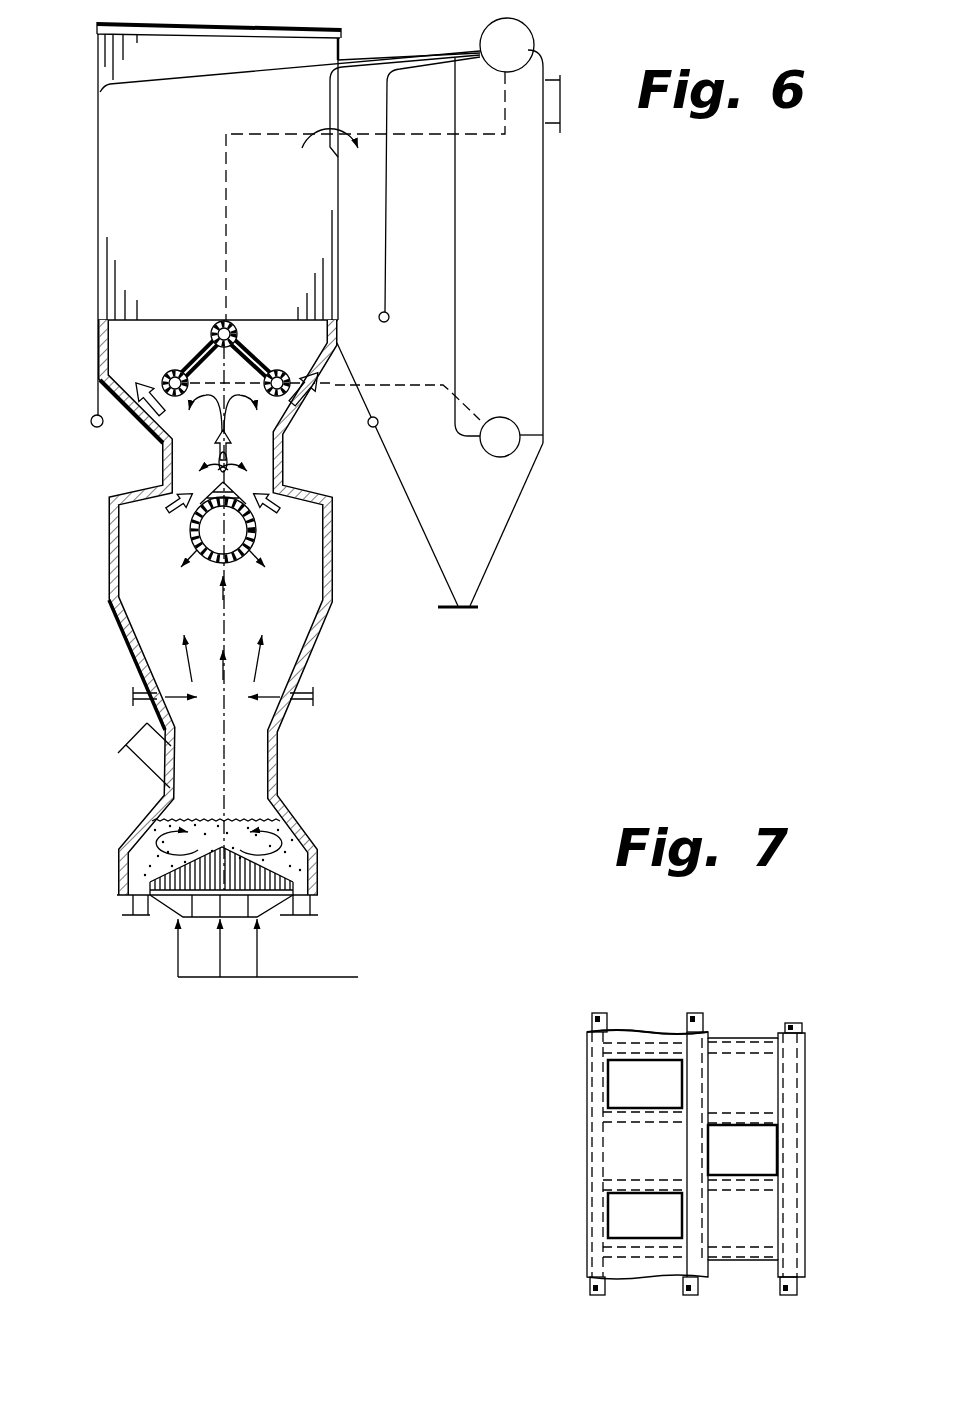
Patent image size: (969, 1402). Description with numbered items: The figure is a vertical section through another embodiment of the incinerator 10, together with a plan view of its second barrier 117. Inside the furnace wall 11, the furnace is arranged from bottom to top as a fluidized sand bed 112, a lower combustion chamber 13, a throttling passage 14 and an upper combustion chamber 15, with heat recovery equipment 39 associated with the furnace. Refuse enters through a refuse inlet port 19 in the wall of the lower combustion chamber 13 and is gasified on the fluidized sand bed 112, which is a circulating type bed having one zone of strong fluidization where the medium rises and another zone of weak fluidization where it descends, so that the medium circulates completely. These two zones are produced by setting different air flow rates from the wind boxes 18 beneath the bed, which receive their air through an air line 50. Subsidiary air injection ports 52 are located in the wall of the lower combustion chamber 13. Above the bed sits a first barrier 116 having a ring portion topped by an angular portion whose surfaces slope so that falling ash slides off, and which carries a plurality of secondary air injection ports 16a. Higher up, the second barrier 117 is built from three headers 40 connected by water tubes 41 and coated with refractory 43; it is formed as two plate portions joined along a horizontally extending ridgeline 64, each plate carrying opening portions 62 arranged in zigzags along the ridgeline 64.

In FIG. 6, the incinerator 10 is at (99, 574).
In FIG. 6, the furnace wall 11 is at (318, 647).
In FIG. 6, the lower combustion chamber 13 is at (155, 627).
In FIG. 6, the throttling passage 14 is at (187, 465).
In FIG. 6, the upper combustion chamber 15 is at (135, 345).
In FIG. 6, the secondary air injection ports 16a is at (248, 557).
In FIG. 6, the wind boxes 18 is at (173, 906).
In FIG. 6, the refuse inlet port 19 is at (128, 734).
In FIG. 6, the heat recovery equipment 39 is at (197, 103).
In FIG. 7, the headers 40 is at (596, 1012).
In FIG. 7, the water tubes 41 is at (739, 1046).
In FIG. 7, the refractory 43 is at (643, 1031).
In FIG. 6, the air line 50 is at (313, 977).
In FIG. 6, the subsidiary air injection ports 52 is at (300, 697).
In FIG. 7, the opening portions 62 is at (625, 1079).
In FIG. 6, the ridgeline 64 is at (215, 318).
In FIG. 6, the fluidized sand bed 112 is at (292, 850).
In FIG. 6, the first barrier 116 is at (256, 528).
In FIG. 6, the second barrier 117 is at (193, 342).
In FIG. 7, the second barrier 117 is at (815, 1106).